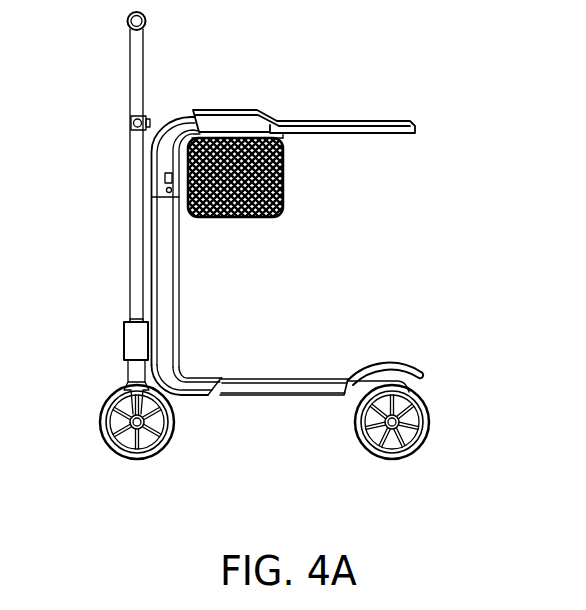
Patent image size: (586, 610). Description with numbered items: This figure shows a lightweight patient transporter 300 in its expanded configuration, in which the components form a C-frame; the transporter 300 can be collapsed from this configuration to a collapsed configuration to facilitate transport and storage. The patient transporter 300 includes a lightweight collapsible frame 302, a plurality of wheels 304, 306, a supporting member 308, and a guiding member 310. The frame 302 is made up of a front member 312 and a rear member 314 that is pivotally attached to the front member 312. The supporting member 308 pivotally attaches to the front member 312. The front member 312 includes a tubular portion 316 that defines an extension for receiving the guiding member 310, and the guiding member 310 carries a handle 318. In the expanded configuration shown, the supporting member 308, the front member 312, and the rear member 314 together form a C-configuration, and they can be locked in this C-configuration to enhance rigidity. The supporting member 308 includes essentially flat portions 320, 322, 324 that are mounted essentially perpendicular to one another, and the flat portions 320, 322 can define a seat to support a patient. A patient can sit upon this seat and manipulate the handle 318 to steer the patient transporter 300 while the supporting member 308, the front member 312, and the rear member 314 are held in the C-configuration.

The patient transporter 300 is at (368, 46).
The frame 302 is at (222, 348).
The wheel 304 is at (104, 446).
The wheel 306 is at (418, 426).
The supporting member 308 is at (290, 118).
The guiding member 310 is at (130, 172).
The front member 312 is at (168, 258).
The rear member 314 is at (262, 395).
The tubular portion 316 is at (124, 343).
The handle 318 is at (128, 22).
The flat portion 320 is at (218, 107).
The flat portion 322 is at (390, 134).
The flat portion 324 is at (286, 205).